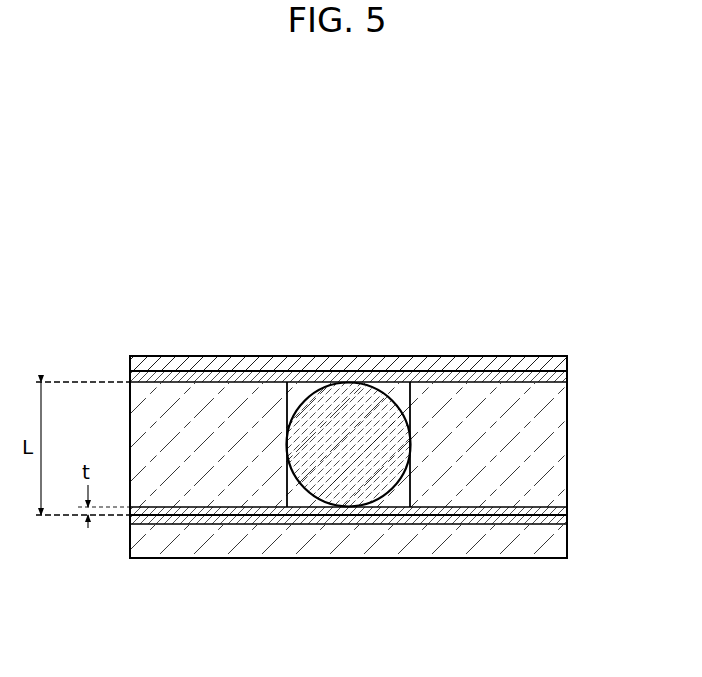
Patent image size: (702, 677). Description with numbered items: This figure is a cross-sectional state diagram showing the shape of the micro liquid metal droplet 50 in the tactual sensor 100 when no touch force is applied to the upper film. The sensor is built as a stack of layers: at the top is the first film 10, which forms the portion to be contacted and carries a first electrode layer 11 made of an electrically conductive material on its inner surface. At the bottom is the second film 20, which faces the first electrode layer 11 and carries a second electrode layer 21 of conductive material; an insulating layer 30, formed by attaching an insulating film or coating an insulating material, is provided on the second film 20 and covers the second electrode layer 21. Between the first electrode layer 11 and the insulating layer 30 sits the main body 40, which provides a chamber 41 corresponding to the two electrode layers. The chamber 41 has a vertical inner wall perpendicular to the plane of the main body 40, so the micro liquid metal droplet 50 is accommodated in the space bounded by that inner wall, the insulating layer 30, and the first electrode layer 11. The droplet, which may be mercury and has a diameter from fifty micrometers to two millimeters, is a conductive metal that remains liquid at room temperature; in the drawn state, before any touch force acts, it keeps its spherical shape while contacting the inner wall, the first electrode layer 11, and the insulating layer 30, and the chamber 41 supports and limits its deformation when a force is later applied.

The tactual sensor 100 is at (363, 171).
The first film 10 is at (466, 366).
The first electrode layer 11 is at (527, 379).
The second film 20 is at (539, 543).
The second electrode layer 21 is at (486, 518).
The insulating layer 30 is at (424, 516).
The main body 40 is at (552, 444).
The chamber 41 is at (300, 502).
The micro liquid metal droplet 50 is at (357, 395).